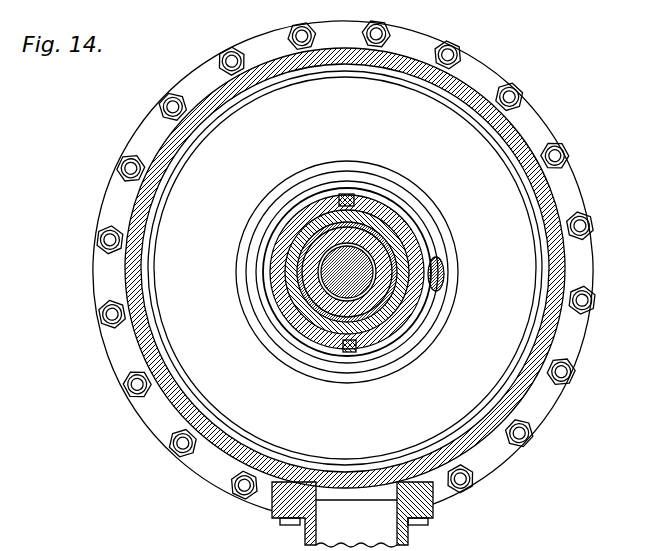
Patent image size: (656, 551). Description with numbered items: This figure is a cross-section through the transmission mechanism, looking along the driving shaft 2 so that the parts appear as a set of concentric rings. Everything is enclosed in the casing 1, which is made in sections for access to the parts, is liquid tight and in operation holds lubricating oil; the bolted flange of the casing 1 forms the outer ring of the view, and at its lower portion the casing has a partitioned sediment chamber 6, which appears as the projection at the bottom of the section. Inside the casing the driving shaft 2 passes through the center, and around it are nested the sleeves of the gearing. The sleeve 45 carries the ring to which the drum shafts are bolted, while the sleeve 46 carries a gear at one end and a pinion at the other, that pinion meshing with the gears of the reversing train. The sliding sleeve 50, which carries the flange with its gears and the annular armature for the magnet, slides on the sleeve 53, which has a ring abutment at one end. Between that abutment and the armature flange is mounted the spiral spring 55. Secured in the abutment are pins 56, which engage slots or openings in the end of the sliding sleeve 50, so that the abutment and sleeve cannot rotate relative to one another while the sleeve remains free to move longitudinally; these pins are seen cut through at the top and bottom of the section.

The casing 1 is at (137, 339).
The driving shaft 2 is at (426, 251).
The partitioned sediment chamber 6 is at (305, 536).
The sleeve 45 is at (298, 333).
The sleeve 46 is at (374, 315).
The sliding sleeve 50 is at (406, 238).
The sleeve 53 is at (436, 306).
The spiral spring 55 is at (425, 289).
The pins 56 is at (347, 199).